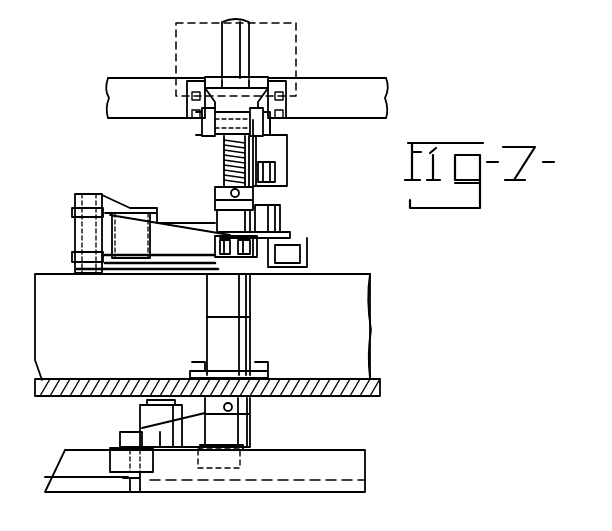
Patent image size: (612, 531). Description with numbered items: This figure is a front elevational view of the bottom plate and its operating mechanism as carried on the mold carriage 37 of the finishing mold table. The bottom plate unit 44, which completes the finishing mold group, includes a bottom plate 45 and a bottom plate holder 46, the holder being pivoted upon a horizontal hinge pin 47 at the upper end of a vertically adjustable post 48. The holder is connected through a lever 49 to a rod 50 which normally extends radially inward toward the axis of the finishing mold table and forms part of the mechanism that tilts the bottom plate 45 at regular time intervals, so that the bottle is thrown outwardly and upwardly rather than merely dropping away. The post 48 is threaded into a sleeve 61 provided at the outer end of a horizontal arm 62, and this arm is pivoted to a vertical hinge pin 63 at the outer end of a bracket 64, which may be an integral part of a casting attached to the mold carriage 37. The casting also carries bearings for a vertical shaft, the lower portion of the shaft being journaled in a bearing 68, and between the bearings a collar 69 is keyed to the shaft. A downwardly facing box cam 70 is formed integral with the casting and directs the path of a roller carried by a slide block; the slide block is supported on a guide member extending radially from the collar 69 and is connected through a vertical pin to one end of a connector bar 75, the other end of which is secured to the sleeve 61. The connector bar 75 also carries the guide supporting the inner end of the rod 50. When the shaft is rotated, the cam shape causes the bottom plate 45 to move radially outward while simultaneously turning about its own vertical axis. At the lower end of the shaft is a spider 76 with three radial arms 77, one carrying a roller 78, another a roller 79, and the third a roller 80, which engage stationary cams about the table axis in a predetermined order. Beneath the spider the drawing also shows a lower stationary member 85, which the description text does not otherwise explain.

The mold carriage 37 is at (360, 85).
The bottom plate unit 44 is at (135, 214).
The bottom plate 45 is at (252, 82).
The bottom plate holder 46 is at (232, 106).
The horizontal hinge pin 47 is at (205, 125).
The vertically adjustable post 48 is at (228, 162).
The lever 49 is at (287, 150).
The rod 50 is at (276, 186).
The sleeve 61 is at (240, 215).
The horizontal arm 62 is at (170, 232).
The vertical hinge pin 63 is at (78, 237).
The bracket 64 is at (149, 207).
The bearing 68 is at (215, 334).
The collar 69 is at (215, 296).
The box cam 70 is at (300, 251).
The connector bar 75 is at (283, 211).
The spider 76 is at (267, 429).
The radial arms 77 is at (185, 440).
The roller 78 is at (113, 458).
The roller 79 is at (240, 463).
The roller 80 is at (148, 416).
The base plate 85 is at (99, 496).